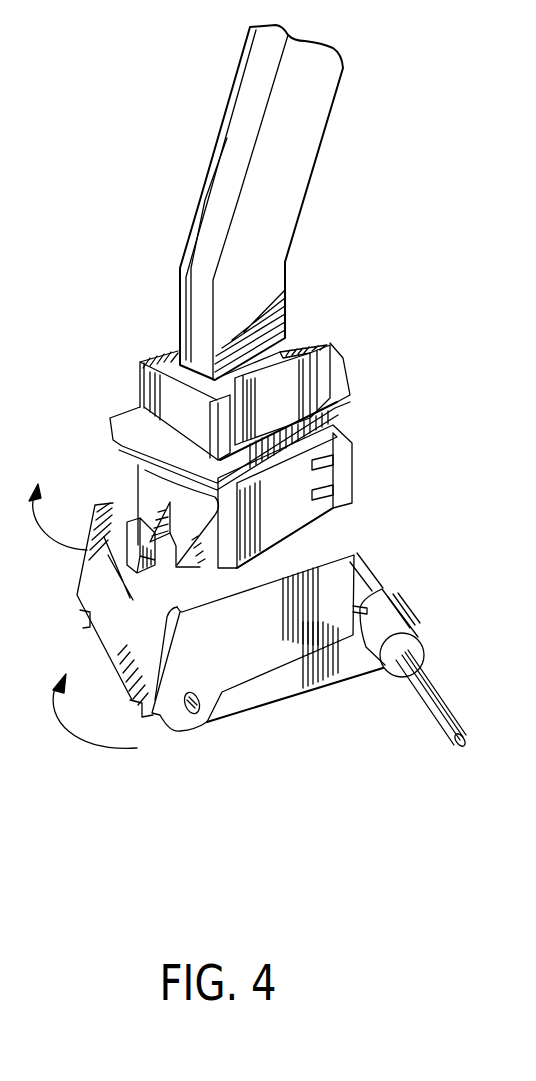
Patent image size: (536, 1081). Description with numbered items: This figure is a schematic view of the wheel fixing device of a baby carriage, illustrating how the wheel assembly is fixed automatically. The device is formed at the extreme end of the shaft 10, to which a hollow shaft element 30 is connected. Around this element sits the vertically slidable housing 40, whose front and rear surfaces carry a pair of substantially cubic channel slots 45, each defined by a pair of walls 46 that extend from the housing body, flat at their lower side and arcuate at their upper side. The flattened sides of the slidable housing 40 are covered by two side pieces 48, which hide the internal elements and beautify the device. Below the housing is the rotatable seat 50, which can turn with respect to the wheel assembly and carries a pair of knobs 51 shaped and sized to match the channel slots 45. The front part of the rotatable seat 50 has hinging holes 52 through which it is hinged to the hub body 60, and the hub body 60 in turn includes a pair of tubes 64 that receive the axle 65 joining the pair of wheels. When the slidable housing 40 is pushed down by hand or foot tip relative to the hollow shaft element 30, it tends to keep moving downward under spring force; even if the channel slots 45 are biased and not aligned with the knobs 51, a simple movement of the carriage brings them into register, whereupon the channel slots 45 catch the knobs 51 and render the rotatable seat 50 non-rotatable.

The shaft 10 is at (285, 213).
The hollow shaft element 30 is at (308, 335).
The slidable housing 40 is at (342, 383).
The channel slots 45 is at (141, 623).
The walls 46 is at (150, 513).
The side pieces 48 is at (333, 510).
The rotatable seat 50 is at (245, 663).
The knobs 51 is at (133, 543).
The hinging holes 52 is at (193, 713).
The hub body 60 is at (322, 678).
The tubes 64 is at (402, 622).
The axle 65 is at (435, 703).